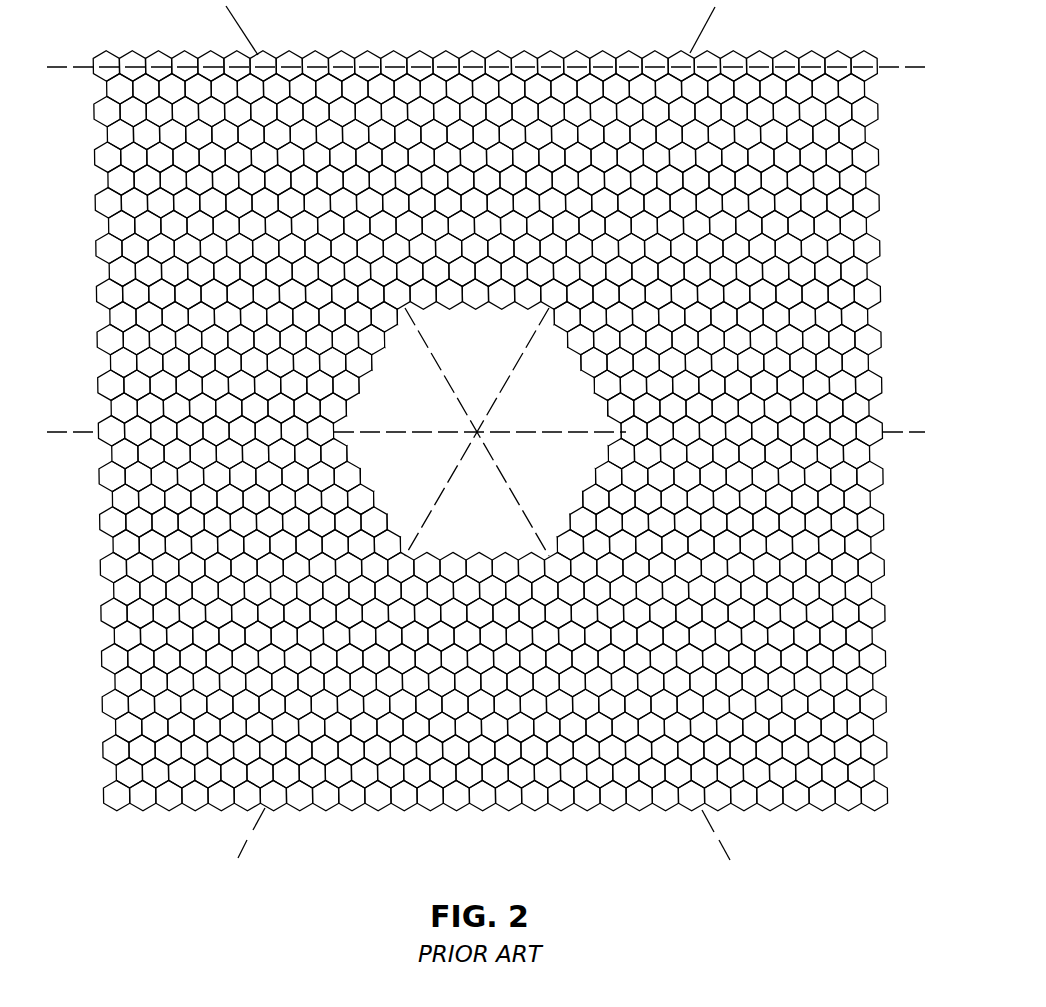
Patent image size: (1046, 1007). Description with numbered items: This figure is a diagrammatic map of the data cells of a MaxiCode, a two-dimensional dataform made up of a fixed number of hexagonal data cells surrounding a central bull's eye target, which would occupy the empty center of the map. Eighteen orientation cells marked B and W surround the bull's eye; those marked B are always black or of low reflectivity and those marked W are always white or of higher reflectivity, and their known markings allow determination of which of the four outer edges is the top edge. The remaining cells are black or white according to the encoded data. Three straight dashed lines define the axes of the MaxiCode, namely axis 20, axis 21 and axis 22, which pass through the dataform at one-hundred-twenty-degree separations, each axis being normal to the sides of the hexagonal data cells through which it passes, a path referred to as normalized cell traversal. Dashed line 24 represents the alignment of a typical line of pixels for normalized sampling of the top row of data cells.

The axis 20 is at (82, 430).
The axis 21 is at (228, 13).
The axis 22 is at (713, 15).
The dashed line 24 is at (78, 65).